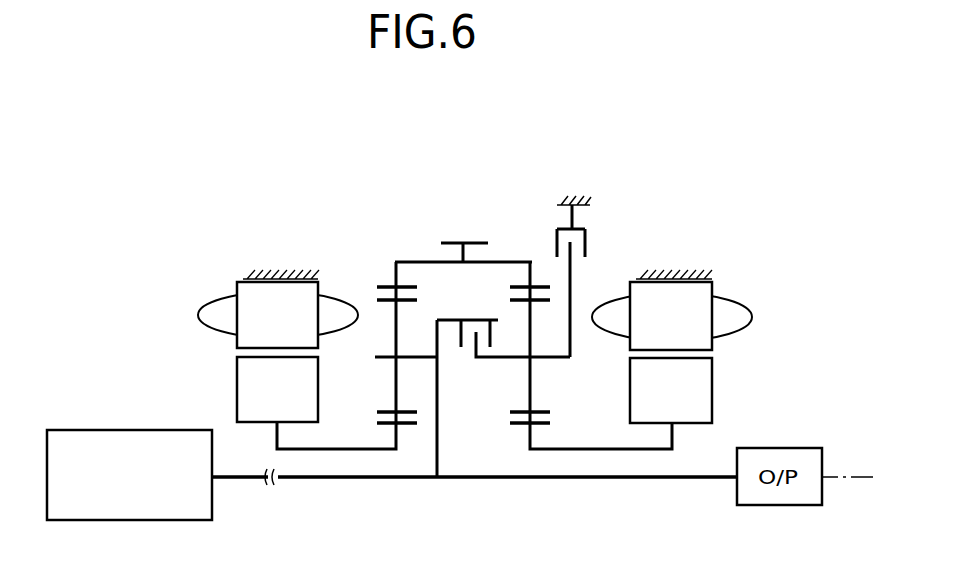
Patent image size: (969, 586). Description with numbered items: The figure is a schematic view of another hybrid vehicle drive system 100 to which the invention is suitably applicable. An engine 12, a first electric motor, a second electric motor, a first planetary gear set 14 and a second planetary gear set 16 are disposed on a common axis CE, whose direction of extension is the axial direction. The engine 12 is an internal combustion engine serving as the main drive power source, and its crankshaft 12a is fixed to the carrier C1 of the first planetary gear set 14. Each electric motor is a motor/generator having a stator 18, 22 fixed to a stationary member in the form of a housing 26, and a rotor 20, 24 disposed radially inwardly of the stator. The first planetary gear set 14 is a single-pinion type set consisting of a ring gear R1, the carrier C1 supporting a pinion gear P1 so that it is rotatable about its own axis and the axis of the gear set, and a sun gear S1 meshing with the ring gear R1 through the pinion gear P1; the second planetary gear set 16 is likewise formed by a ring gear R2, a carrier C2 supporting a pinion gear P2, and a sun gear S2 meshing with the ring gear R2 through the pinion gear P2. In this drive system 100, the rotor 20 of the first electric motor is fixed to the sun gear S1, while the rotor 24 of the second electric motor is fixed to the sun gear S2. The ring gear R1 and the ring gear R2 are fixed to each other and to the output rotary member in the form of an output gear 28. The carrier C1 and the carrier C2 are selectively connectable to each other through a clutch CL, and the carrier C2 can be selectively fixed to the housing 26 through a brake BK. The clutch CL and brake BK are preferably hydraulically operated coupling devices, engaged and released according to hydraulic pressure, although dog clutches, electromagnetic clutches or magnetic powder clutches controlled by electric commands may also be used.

The hybrid vehicle drive system 100 is at (642, 157).
The engine 12 is at (85, 435).
The crankshaft 12a is at (243, 480).
The first planetary gear set 14 is at (370, 336).
The second planetary gear set 16 is at (567, 318).
The stator 18 is at (240, 342).
The rotor 20 is at (238, 390).
The stator 22 is at (707, 345).
The rotor 24 is at (708, 392).
The housing 26 is at (281, 274).
The output gear 28 is at (455, 242).
The ring gear R1 is at (395, 277).
The ring gear R2 is at (521, 284).
The pinion gear P1 is at (389, 408).
The pinion gear P2 is at (538, 410).
The sun gear S1 is at (382, 430).
The sun gear S2 is at (540, 428).
The carrier C1 is at (410, 356).
The carrier C2 is at (513, 358).
The clutch CL is at (467, 321).
The brake BK is at (585, 281).
The axis CE is at (863, 478).